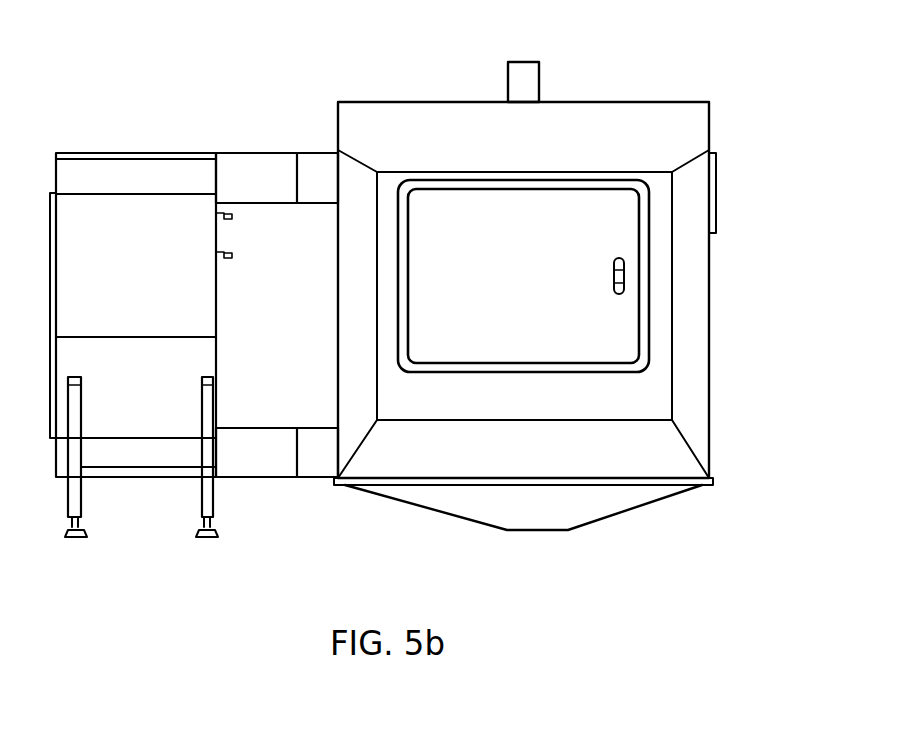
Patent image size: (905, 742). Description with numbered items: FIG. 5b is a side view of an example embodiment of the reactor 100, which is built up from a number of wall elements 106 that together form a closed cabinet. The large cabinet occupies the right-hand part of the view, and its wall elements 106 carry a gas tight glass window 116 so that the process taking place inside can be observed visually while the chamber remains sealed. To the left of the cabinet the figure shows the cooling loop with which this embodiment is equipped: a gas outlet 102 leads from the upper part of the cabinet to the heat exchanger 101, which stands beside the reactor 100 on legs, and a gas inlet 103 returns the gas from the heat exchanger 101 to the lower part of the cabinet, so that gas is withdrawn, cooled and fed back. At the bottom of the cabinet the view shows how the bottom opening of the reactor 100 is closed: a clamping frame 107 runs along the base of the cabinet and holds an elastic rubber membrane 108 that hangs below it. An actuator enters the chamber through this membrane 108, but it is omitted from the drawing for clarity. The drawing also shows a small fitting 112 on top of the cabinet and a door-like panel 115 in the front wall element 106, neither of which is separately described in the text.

The reactor 100 is at (667, 102).
The heat exchanger 101 is at (133, 200).
The gas outlet 102 is at (272, 178).
The gas inlet 103 is at (265, 460).
The wall element 106 is at (597, 147).
The clamping frame 107 is at (713, 481).
The elastic rubber membrane 108 is at (570, 515).
The exhaust connection 112 is at (520, 62).
The viewing window 115 is at (473, 322).
The gas tight glass window 116 is at (716, 187).